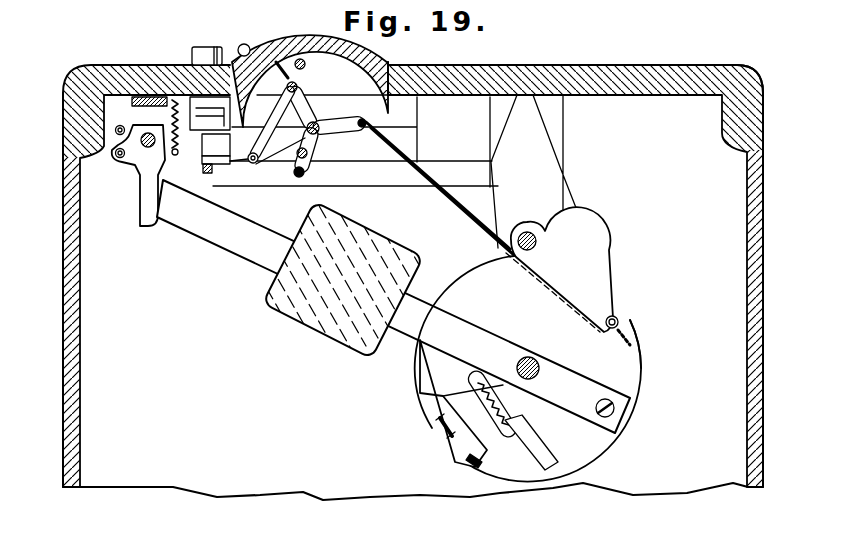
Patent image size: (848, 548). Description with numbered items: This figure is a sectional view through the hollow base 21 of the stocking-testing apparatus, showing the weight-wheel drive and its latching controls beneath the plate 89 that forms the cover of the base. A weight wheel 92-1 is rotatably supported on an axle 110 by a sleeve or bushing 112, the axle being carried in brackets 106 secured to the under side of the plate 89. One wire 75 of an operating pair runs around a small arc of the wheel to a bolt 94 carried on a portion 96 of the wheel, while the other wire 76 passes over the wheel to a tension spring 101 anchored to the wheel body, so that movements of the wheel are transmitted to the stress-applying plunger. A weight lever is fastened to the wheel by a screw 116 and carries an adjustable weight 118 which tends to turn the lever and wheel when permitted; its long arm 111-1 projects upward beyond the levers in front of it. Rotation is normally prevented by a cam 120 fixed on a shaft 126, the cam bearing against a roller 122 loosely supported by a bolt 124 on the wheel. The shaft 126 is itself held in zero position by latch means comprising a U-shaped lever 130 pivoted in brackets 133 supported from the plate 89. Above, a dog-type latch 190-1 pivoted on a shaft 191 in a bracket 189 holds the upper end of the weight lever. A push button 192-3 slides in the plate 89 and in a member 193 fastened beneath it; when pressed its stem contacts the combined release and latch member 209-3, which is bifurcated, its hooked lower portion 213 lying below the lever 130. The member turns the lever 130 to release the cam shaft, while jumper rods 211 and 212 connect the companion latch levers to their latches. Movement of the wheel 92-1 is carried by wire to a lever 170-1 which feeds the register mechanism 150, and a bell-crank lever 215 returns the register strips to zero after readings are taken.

The hollow base 21 is at (764, 214).
The wire 75 is at (430, 406).
The wire 76 is at (540, 458).
The plate 89 is at (755, 57).
The weight wheel 92-1 is at (610, 447).
The bolt 94 is at (443, 430).
The portion of wheel 96 is at (457, 458).
The tension spring 101 is at (248, 42).
The brackets 106 is at (563, 127).
The axle 110 is at (622, 362).
The bar 111-1 is at (240, 255).
The sleeves or bushings 112 is at (528, 357).
The screw 116 is at (614, 409).
The weight 118 is at (310, 335).
The cam 120 is at (600, 258).
The roller 122 is at (620, 318).
The bolt 124 is at (617, 322).
The shaft 126 is at (538, 227).
The U-shaped lever 130 is at (458, 147).
The brackets 133 is at (417, 118).
The register mechanism 150 is at (385, 62).
The lever 170-1 is at (341, 130).
The bracket 189 is at (142, 97).
The latch 190-1 is at (140, 212).
The shaft 191 is at (147, 147).
The push button 192-3 is at (210, 47).
The member 193 is at (200, 104).
The combined release and latch lever 209-3 is at (195, 187).
The jumper rod 211 is at (115, 130).
The jumper rod 212 is at (117, 153).
The hook portion 213 is at (222, 186).
The bell-crank lever 215 is at (243, 47).